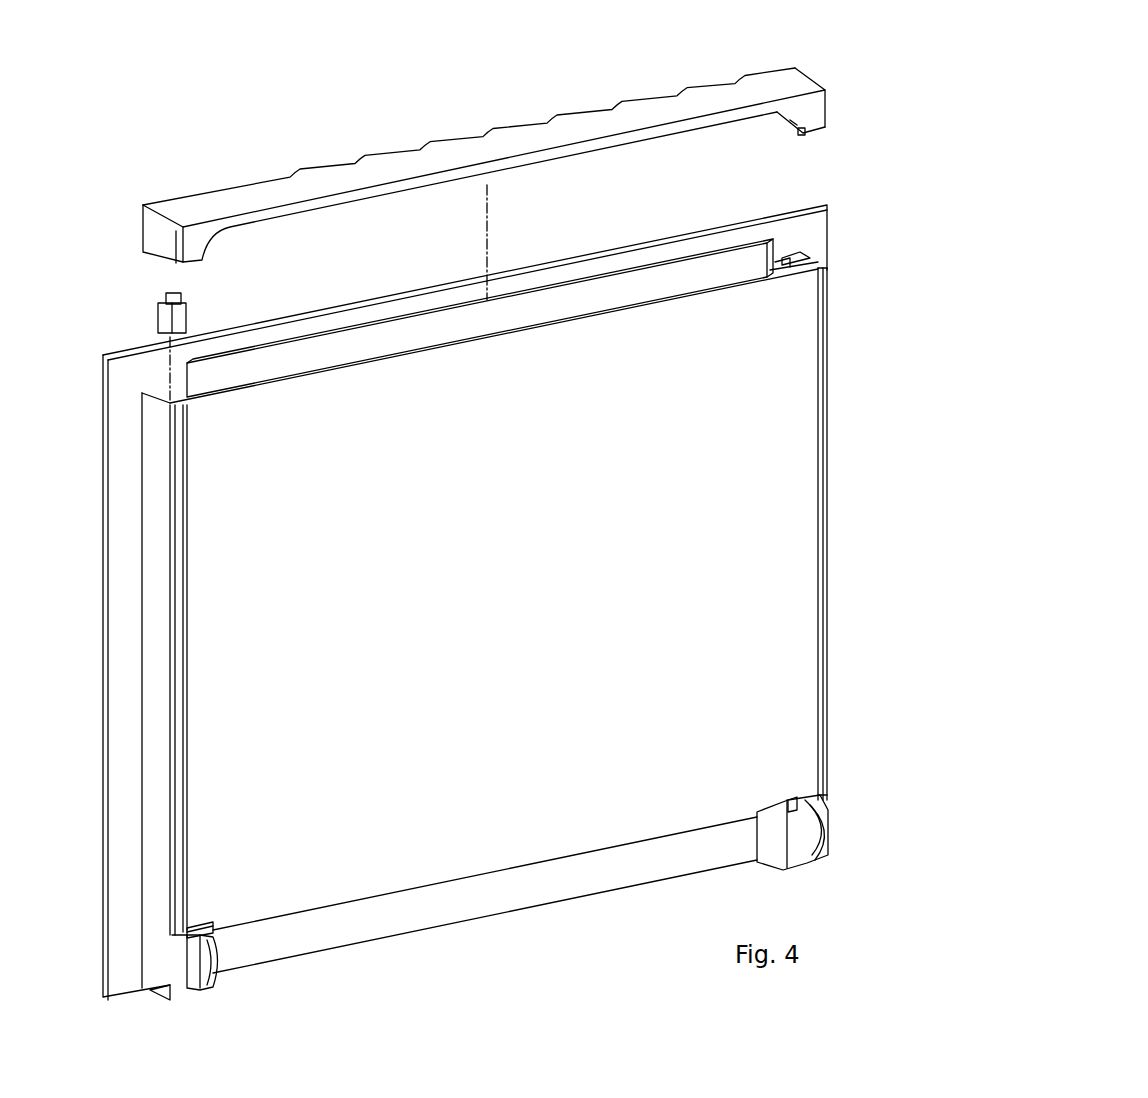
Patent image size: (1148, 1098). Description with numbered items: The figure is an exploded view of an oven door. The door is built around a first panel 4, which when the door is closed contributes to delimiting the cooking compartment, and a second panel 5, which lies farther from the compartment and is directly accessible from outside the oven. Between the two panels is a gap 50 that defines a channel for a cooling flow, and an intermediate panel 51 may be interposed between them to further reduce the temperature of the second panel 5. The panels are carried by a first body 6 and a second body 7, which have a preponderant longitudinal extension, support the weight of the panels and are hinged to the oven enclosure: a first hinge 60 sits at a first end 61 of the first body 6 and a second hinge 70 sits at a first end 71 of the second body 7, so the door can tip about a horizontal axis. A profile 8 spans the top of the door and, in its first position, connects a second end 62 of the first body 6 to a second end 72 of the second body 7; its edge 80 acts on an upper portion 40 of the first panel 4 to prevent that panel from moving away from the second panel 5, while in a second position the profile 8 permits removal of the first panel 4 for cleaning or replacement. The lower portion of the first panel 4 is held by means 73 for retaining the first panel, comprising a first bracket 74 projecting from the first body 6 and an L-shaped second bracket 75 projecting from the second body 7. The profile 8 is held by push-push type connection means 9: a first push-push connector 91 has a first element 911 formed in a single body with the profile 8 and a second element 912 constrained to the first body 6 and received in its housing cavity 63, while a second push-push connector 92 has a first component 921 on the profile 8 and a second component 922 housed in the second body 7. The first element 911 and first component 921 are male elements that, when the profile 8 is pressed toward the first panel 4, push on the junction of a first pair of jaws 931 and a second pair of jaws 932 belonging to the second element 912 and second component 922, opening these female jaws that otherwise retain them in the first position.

The first panel 4 is at (508, 577).
The upper portion 40 is at (693, 312).
The second panel 5 is at (100, 975).
The gap 50 is at (560, 305).
The intermediate panel 51 is at (684, 250).
The first body 6 is at (153, 755).
The first hinge 60 is at (221, 986).
The first end 61 is at (155, 962).
The second end 62 is at (150, 414).
The housing cavity 63 is at (165, 398).
The second body 7 is at (748, 825).
The second hinge 70 is at (800, 835).
The first end 71 is at (838, 827).
The second end 72 is at (808, 253).
The means for retaining the first panel 73 is at (808, 782).
The first bracket 74 is at (211, 912).
The second bracket 75 is at (783, 801).
The profile 8 is at (713, 82).
The edge 80 is at (385, 199).
The push-push type connection means 9 is at (188, 264).
The first push-push connector 91 is at (135, 316).
The first element 911 is at (170, 263).
The second element 912 is at (190, 320).
The second push-push connector 92 is at (787, 133).
The first component 921 is at (812, 133).
The second component 922 is at (782, 256).
The first pair of jaws 931 is at (160, 294).
The second pair of jaws 932 is at (777, 268).